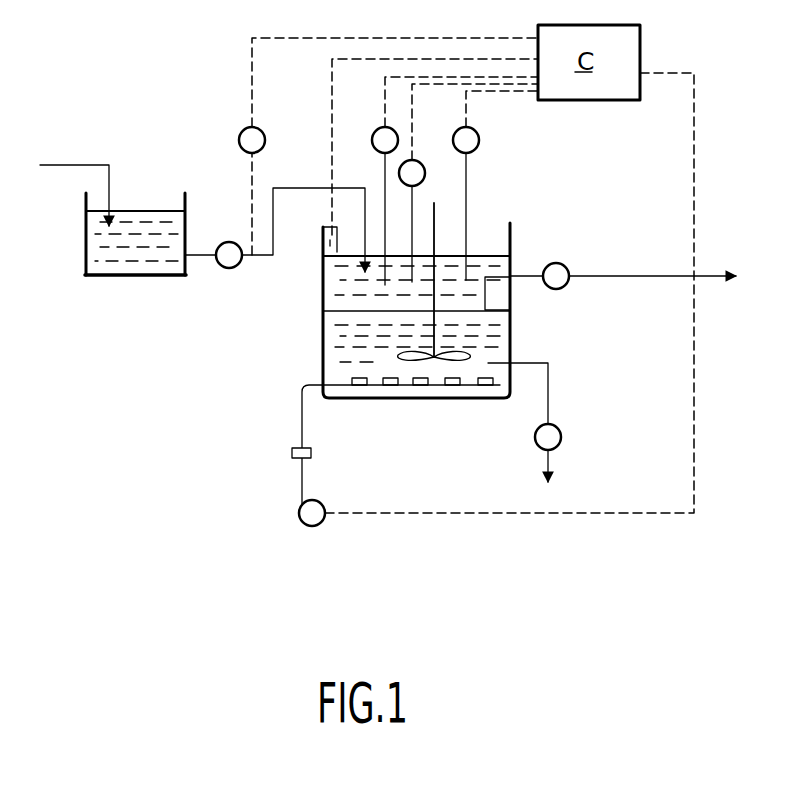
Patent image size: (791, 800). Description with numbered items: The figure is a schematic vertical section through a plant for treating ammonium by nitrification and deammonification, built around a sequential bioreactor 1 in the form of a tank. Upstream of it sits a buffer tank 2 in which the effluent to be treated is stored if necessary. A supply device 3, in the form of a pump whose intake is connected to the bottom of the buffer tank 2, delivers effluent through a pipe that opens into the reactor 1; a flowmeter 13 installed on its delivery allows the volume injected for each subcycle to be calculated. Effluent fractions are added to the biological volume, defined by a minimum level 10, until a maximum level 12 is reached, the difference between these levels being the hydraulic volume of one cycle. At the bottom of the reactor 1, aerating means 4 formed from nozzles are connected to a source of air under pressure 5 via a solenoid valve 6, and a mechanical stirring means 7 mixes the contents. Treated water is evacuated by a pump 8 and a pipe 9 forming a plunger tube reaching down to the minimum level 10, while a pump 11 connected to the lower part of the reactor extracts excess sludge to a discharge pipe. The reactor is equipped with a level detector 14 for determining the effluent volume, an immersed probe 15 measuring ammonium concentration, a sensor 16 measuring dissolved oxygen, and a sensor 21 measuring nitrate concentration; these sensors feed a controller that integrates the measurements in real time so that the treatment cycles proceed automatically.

The sequential bioreactor 1 is at (314, 338).
The buffer tank 2 is at (140, 262).
The device for supplying the bioreactor with effluents 3 is at (230, 268).
The aerating means 4 is at (392, 385).
The source of air under pressure 5 is at (301, 516).
The solenoid valve 6 is at (292, 452).
The mechanical stirring means 7 is at (467, 358).
The pump 8 is at (556, 263).
The pipe forming a plunger tube 9 is at (513, 277).
The minimum level 10 is at (497, 313).
The pump 11 is at (562, 438).
The maximum level 12 is at (488, 255).
The flowmeter 13 is at (240, 135).
The detector of the level of the effluent 14 is at (330, 226).
The sensor or probe 15 is at (479, 139).
The sensor 16 is at (373, 136).
The sensor 21 is at (422, 164).